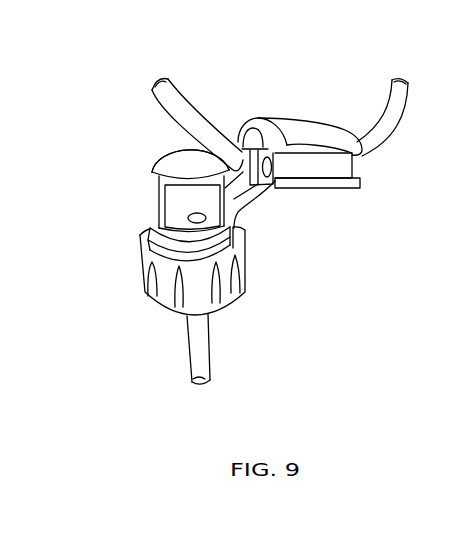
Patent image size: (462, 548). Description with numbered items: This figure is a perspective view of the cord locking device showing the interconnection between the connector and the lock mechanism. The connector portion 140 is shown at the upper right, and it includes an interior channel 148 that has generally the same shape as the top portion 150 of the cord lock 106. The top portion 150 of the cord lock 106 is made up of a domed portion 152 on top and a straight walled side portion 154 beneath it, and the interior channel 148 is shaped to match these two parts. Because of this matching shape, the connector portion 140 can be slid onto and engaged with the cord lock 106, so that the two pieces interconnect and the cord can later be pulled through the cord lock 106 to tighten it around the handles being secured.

The cord lock 106 is at (245, 218).
The connector portion 140 is at (312, 133).
The interior channel 148 is at (250, 135).
The top portion 150 is at (118, 178).
The domed portion 152 is at (160, 152).
The straight walled side portion 154 is at (153, 228).